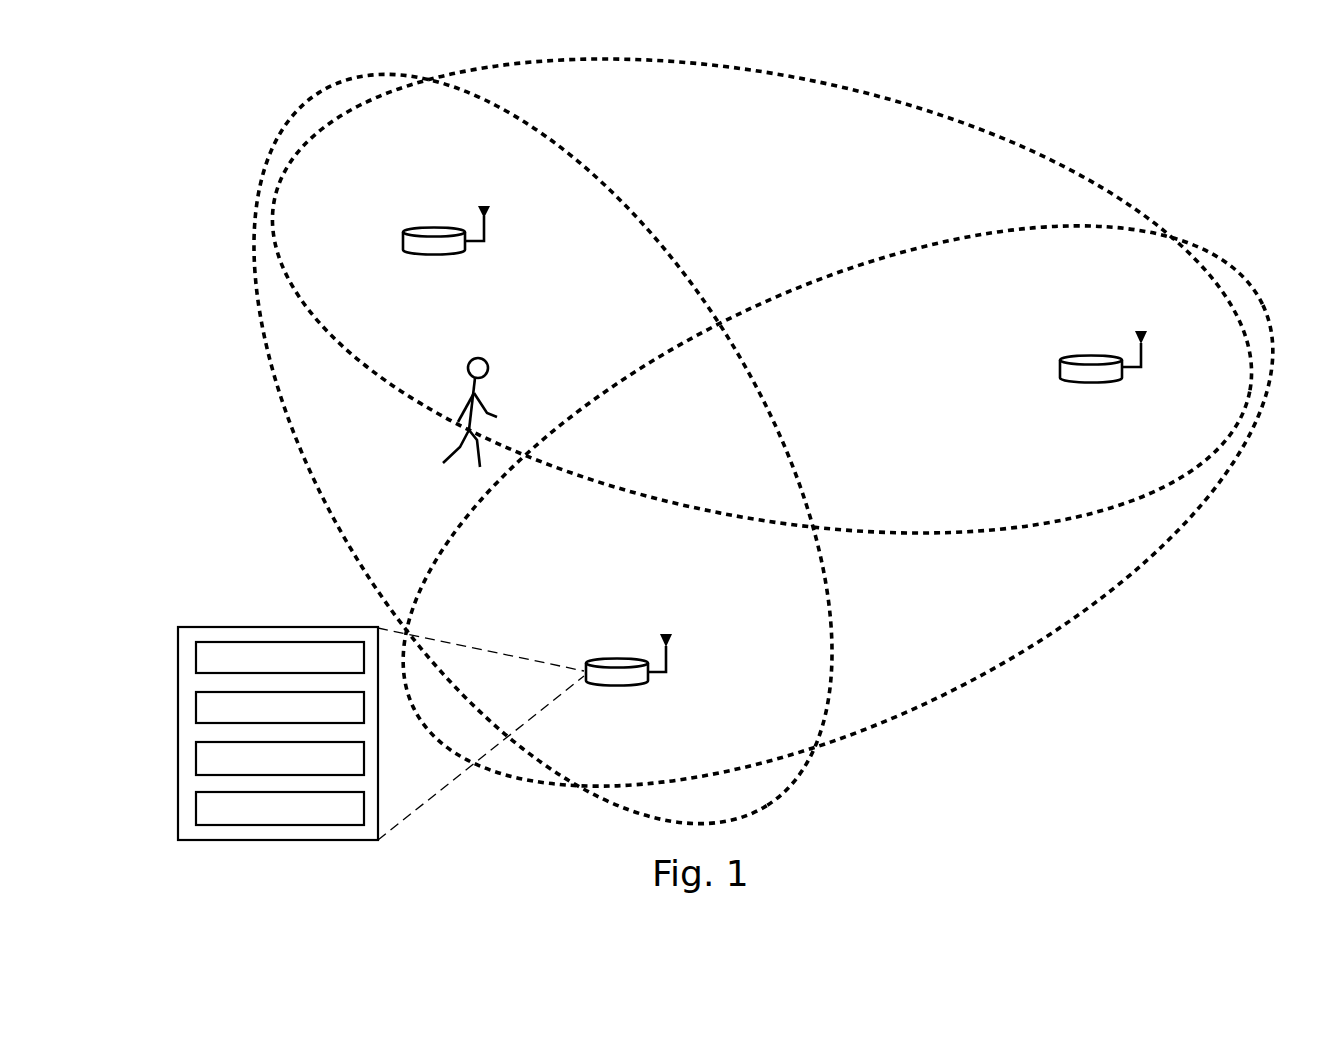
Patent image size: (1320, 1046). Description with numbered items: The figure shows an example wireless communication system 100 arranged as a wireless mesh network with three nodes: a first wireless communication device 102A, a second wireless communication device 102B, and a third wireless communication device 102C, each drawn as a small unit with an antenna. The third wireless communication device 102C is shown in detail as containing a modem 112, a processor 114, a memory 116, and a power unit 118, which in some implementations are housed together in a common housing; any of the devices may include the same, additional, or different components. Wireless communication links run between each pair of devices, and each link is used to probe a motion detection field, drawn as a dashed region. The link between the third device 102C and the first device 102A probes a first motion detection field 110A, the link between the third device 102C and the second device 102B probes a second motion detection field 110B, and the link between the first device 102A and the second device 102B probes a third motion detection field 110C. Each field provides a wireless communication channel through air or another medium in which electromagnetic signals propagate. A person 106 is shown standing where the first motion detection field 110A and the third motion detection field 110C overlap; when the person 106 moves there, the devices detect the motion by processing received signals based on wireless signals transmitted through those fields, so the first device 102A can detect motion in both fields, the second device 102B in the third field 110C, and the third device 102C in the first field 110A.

The wireless communication system 100 is at (250, 104).
The first wireless communication device 102A is at (407, 229).
The second wireless communication device 102B is at (1063, 357).
The third wireless communication device 102C is at (589, 660).
The person 106 is at (456, 390).
The first motion detection field 110A is at (251, 268).
The second motion detection field 110B is at (897, 251).
The third motion detection field 110C is at (1040, 152).
The modem 112 is at (196, 808).
The processor 114 is at (196, 758).
The memory 116 is at (196, 707).
The power unit 118 is at (196, 656).